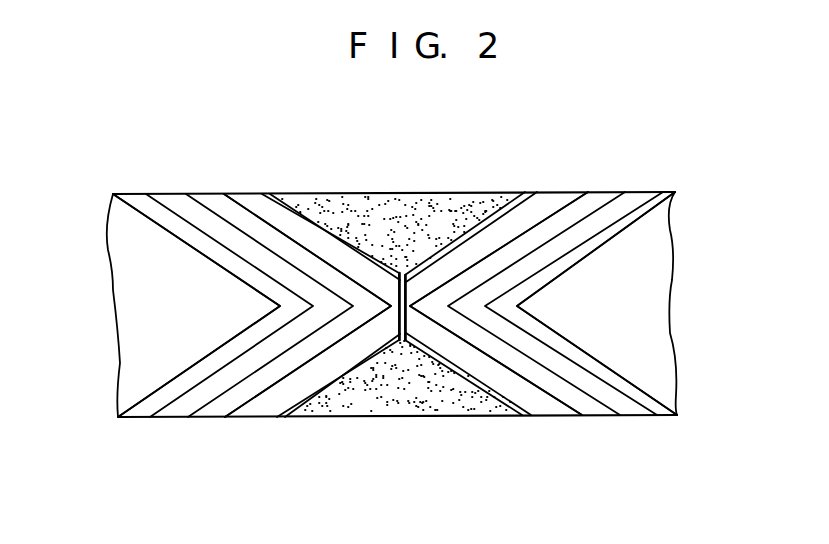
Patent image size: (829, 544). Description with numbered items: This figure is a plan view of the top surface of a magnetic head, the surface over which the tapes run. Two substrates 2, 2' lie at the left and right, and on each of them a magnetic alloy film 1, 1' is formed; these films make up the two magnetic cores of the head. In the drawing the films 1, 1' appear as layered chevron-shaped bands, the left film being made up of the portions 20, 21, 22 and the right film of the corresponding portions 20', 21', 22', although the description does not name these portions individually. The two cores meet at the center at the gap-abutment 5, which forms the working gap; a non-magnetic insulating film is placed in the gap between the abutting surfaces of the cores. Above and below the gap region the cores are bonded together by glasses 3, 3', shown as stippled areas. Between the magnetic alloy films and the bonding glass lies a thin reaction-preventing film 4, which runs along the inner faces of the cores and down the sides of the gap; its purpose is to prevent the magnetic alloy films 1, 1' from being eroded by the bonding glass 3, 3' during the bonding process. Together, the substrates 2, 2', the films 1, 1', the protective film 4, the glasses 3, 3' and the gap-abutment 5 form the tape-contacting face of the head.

The magnetic alloy film 1 is at (252, 278).
The magnetic alloy film 1' is at (543, 272).
The substrate 2 is at (102, 305).
The substrate 2' is at (698, 303).
The glass 3 is at (395, 199).
The glass 3' is at (408, 417).
The reaction-preventing film 4 is at (480, 226).
The gap-abutment 5 is at (410, 418).
The first layer of laminate 1 20 is at (213, 339).
The second layer of laminate 1 21 is at (269, 343).
The third layer of laminate 1 22 is at (307, 337).
The first layer of laminate 1' 20' is at (585, 342).
The second layer of laminate 1' 21' is at (536, 345).
The third layer of laminate 1' 22' is at (499, 342).